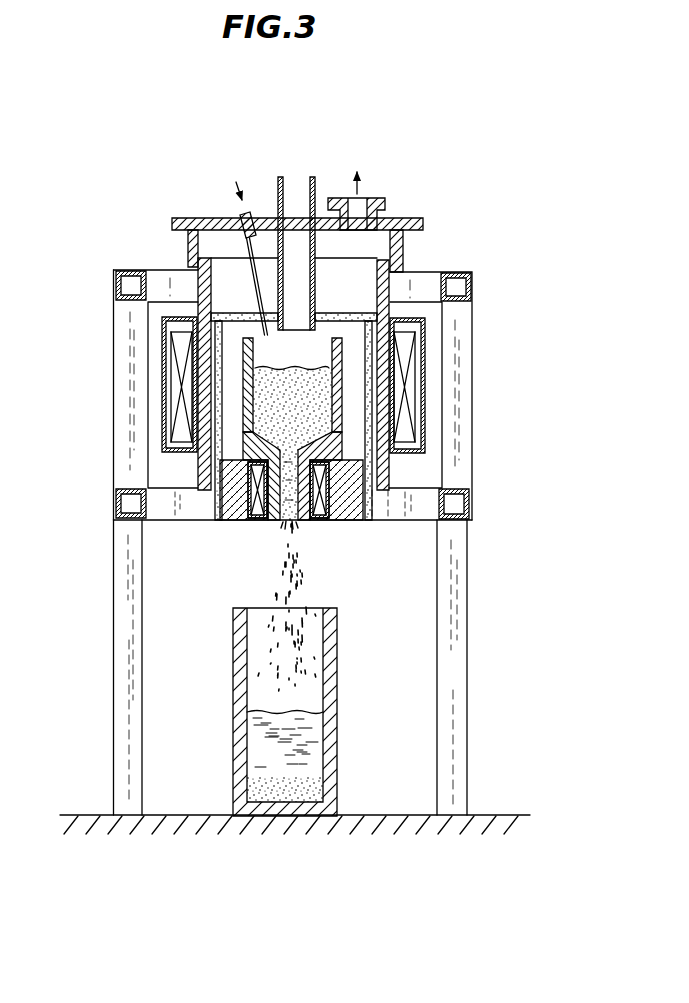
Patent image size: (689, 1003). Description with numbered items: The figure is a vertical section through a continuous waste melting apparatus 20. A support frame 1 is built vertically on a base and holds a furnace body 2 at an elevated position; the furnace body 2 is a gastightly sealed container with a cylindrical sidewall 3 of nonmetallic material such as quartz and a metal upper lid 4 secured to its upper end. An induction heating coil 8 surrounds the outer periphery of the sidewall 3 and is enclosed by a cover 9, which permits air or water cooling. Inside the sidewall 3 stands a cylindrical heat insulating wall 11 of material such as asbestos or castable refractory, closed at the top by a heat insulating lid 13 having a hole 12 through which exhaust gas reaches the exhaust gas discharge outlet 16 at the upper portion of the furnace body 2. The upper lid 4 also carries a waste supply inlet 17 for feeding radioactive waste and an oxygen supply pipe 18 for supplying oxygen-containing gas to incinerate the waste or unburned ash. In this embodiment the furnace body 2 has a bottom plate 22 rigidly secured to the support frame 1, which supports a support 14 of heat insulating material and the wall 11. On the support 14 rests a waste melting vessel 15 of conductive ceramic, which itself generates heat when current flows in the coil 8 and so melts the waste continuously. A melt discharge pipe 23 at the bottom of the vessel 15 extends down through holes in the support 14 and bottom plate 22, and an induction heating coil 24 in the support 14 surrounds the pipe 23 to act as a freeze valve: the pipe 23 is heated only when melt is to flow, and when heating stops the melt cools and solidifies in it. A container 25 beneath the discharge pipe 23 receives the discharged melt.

The support frame 1 is at (460, 600).
The furnace body 2 is at (398, 287).
The cylindrical sidewall 3 is at (390, 310).
The upper lid 4 is at (420, 220).
The induction heating coil 8 is at (412, 415).
The cover 9 is at (425, 358).
The heat insulating wall 11 is at (372, 395).
The hole 12 is at (338, 313).
The heat insulating lid 13 is at (237, 318).
The support 14 is at (352, 497).
The waste melting vessel 15 is at (335, 452).
The exhaust gas discharge outlet 16 is at (360, 198).
The waste supply inlet 17 is at (302, 182).
The oxygen supply pipe 18 is at (247, 210).
The continuous waste melting apparatus 20 is at (106, 438).
The bottom plate 22 is at (193, 507).
The melt discharge pipe 23 is at (305, 521).
The induction heating coil 24 is at (320, 503).
The container 25 is at (333, 662).